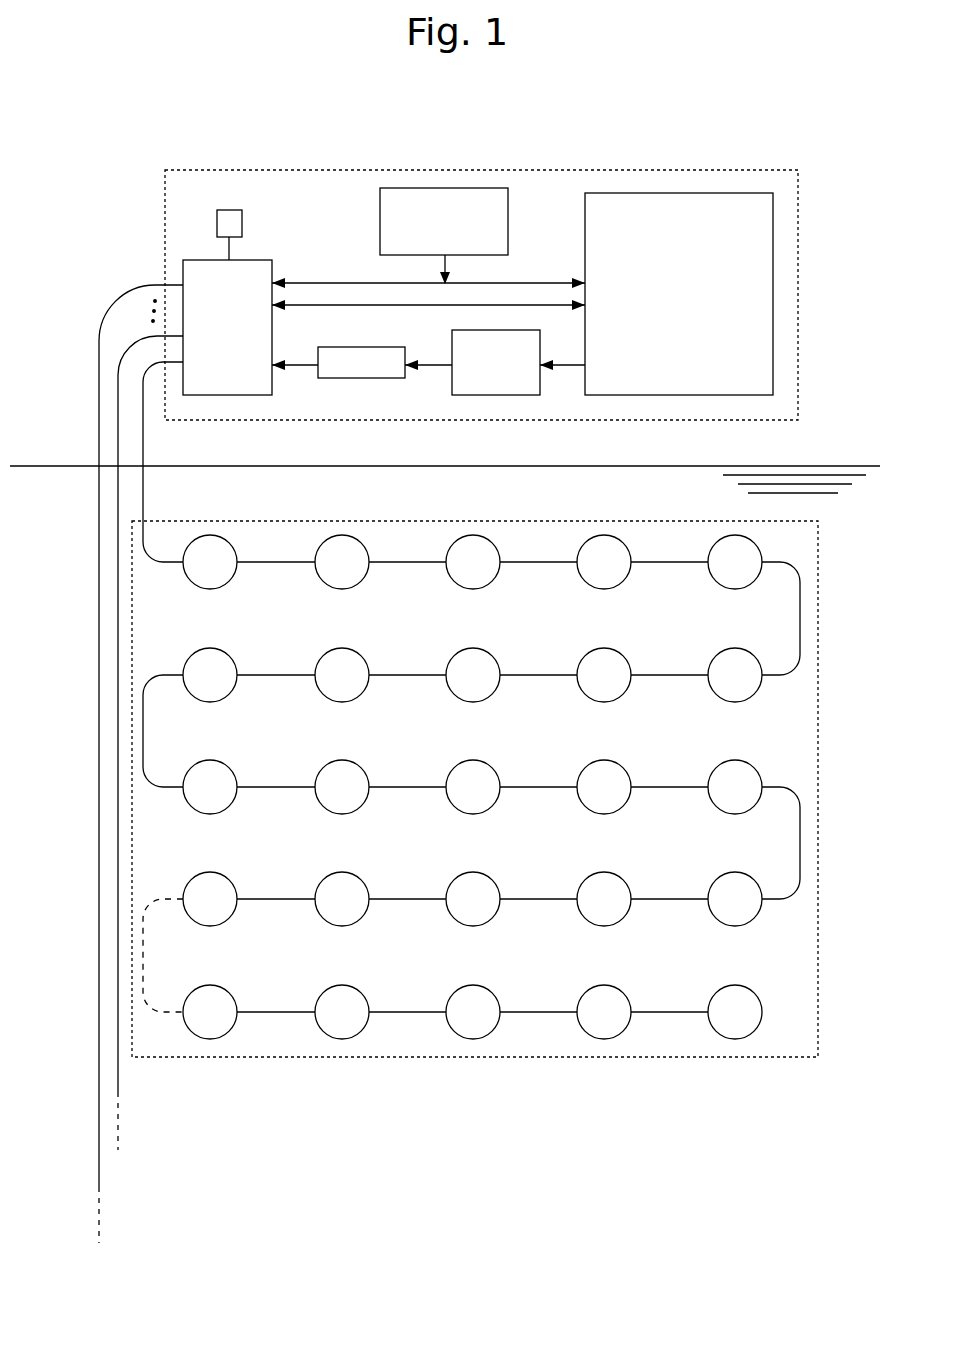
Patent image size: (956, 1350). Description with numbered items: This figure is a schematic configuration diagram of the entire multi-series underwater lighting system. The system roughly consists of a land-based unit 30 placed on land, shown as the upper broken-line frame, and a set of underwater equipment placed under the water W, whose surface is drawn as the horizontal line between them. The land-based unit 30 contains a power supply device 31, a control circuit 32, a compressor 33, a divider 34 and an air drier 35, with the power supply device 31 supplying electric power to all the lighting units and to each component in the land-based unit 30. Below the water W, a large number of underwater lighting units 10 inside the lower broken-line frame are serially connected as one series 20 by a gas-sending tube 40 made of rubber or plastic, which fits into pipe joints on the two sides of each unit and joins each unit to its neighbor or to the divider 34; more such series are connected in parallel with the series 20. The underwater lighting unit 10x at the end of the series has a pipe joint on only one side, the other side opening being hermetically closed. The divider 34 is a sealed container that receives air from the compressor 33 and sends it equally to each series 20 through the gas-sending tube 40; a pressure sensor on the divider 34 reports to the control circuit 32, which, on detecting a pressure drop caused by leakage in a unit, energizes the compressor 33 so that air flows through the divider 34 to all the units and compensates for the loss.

The underwater lighting unit 10 is at (600, 1038).
The underwater lighting unit at the end of the series 10x is at (733, 1038).
The series 20 is at (473, 1057).
The land-based unit 30 is at (338, 170).
The power supply device 31 is at (445, 188).
The control circuit 32 is at (680, 193).
The compressor 33 is at (497, 395).
The divider 34 is at (228, 395).
The air drier 35 is at (368, 378).
The gas-sending tube 40 is at (120, 300).
The water W is at (447, 486).